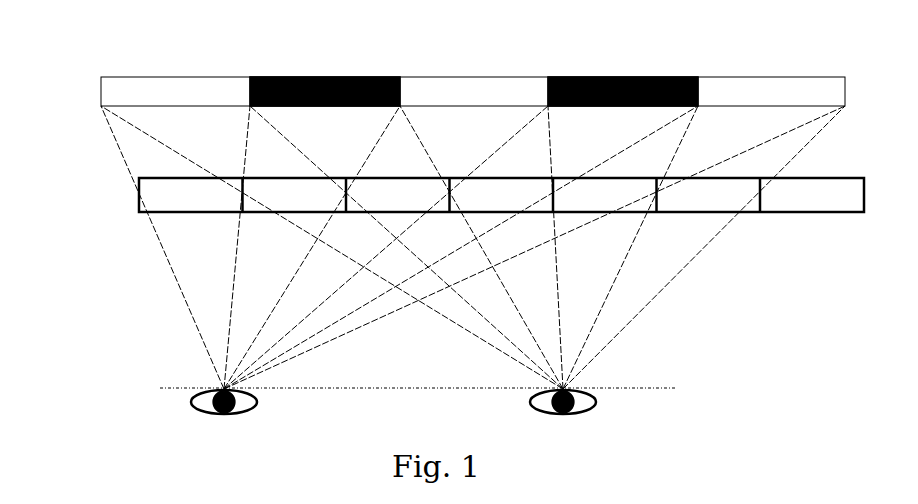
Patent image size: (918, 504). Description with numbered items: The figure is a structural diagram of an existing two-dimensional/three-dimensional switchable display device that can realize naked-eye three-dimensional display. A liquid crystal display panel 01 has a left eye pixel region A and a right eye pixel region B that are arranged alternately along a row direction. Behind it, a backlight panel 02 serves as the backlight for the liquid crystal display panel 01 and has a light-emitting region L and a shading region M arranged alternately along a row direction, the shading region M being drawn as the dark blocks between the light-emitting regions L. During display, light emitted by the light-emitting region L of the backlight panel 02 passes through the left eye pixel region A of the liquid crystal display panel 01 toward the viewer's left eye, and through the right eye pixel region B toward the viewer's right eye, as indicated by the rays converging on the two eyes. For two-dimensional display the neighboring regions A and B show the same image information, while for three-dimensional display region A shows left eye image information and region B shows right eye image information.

The liquid crystal display panel 01 is at (139, 197).
The backlight panel 02 is at (101, 96).
The shading region M is at (312, 77).